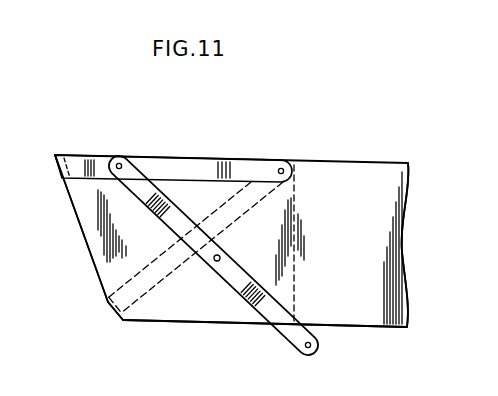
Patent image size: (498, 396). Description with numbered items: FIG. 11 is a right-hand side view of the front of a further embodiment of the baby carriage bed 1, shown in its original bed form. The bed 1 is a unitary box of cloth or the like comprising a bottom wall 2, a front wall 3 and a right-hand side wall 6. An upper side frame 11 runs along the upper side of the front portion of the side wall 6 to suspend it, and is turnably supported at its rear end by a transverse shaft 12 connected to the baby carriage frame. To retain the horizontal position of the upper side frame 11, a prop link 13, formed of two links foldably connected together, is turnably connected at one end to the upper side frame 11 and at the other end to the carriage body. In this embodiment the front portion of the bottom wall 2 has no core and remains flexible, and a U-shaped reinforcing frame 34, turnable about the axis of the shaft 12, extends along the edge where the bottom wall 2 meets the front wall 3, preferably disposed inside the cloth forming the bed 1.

The baby carriage bed 1 is at (372, 149).
The bottom wall 2 is at (336, 329).
The front wall 3 is at (87, 245).
The right-hand side wall 6 is at (366, 316).
The upper side frame 11 is at (215, 165).
The transverse shaft 12 is at (288, 164).
The prop link 13 is at (231, 286).
The reinforcing frame 34 is at (143, 300).